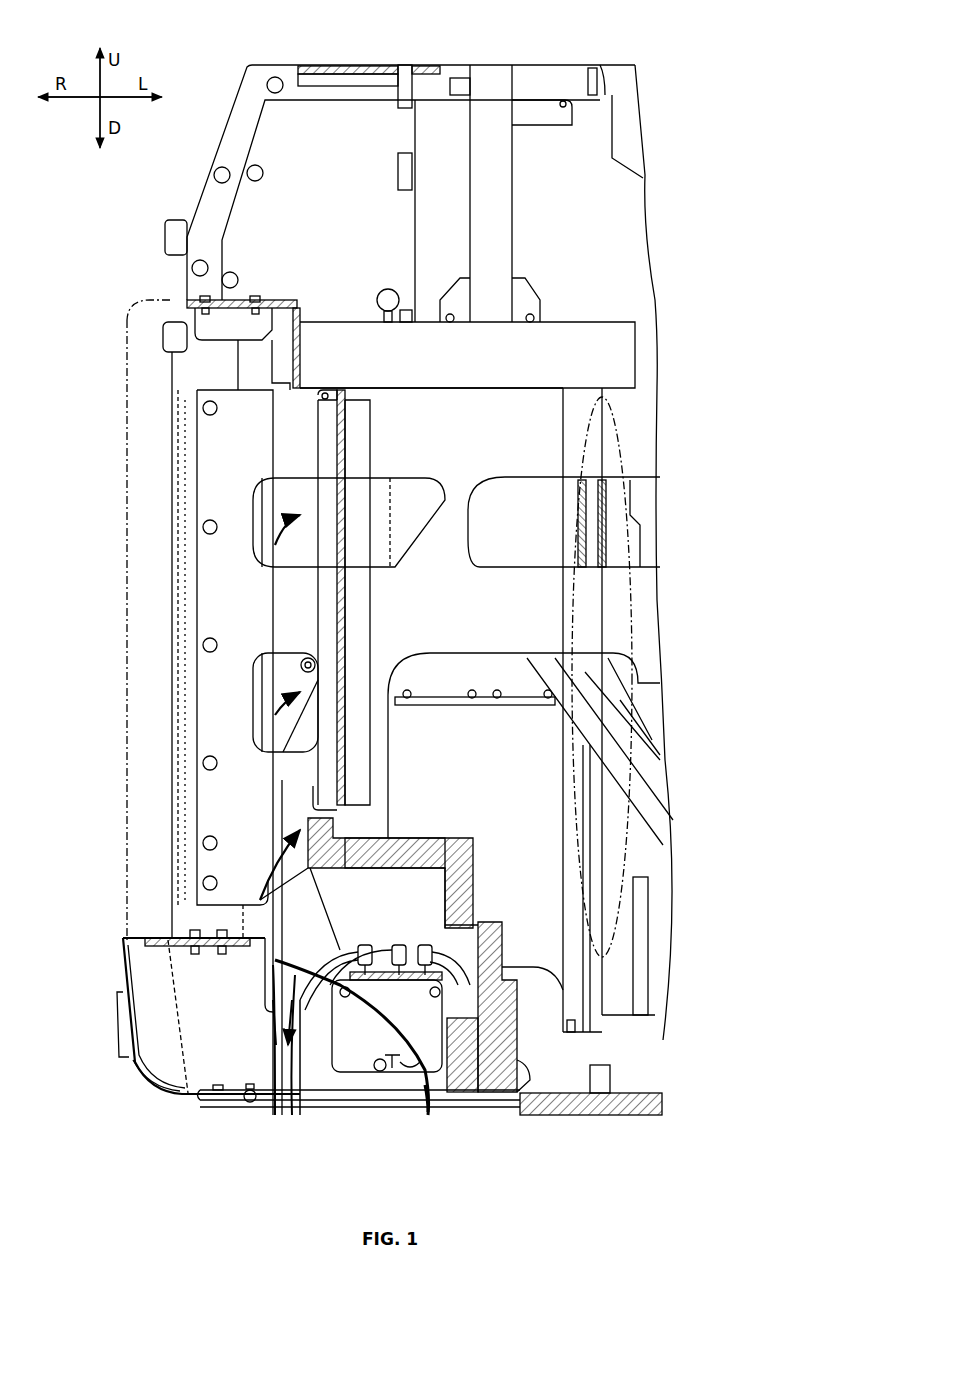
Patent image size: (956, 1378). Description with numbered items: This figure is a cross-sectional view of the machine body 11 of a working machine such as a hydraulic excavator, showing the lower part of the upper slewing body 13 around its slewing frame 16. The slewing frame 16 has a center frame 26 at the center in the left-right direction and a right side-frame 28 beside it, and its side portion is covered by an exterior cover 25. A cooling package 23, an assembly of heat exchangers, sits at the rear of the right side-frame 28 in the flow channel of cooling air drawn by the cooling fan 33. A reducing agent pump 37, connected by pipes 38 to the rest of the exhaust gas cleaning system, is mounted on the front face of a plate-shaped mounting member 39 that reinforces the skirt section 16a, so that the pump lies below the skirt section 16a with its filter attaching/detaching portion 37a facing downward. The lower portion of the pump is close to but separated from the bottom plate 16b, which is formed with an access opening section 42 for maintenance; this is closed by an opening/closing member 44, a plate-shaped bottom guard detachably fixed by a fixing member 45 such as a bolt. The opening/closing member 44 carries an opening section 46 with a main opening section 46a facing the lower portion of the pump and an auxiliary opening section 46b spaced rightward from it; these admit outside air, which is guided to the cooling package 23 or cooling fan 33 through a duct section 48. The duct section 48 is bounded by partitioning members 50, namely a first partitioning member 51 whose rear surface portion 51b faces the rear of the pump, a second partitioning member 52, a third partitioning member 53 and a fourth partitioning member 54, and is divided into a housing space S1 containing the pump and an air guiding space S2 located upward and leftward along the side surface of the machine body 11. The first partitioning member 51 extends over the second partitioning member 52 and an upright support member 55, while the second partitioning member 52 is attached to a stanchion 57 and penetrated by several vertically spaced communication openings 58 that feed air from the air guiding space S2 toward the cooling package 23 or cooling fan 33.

The machine body 11 is at (138, 274).
The upper slewing body 13 is at (112, 936).
The slewing frame 16 is at (137, 1068).
The skirt section 16a is at (120, 970).
The bottom plate 16b is at (478, 1100).
The cooling package 23 is at (628, 967).
The exterior cover 25 is at (128, 595).
The center frame 26 is at (636, 1116).
The right side-frame 28 is at (186, 1098).
The cooling fan 33 is at (634, 432).
The reducing agent pump 37 is at (340, 1072).
The filter attaching/detaching portion 37a is at (410, 1072).
The pipes 38 is at (360, 960).
The mounting member 39 is at (188, 1045).
The access opening section 42 is at (225, 1100).
The opening/closing member 44 is at (505, 1098).
The fixing member 45 is at (250, 1104).
The opening section 46 is at (300, 1100).
The main opening section 46a is at (430, 1095).
The auxiliary opening section 46b is at (292, 1015).
The duct section 48 is at (215, 818).
The partitioning member 50 is at (195, 440).
The first partitioning member 51 is at (412, 882).
The rear surface portion 51b is at (432, 895).
The second partitioning member 52 is at (200, 476).
The third partitioning member 53 is at (346, 440).
The fourth partitioning member 54 is at (272, 298).
The support member 55 is at (372, 835).
The stanchion 57 is at (182, 369).
The communication opening 58 is at (265, 560).
The housing space S1 is at (428, 910).
The air guiding space S2 is at (182, 740).